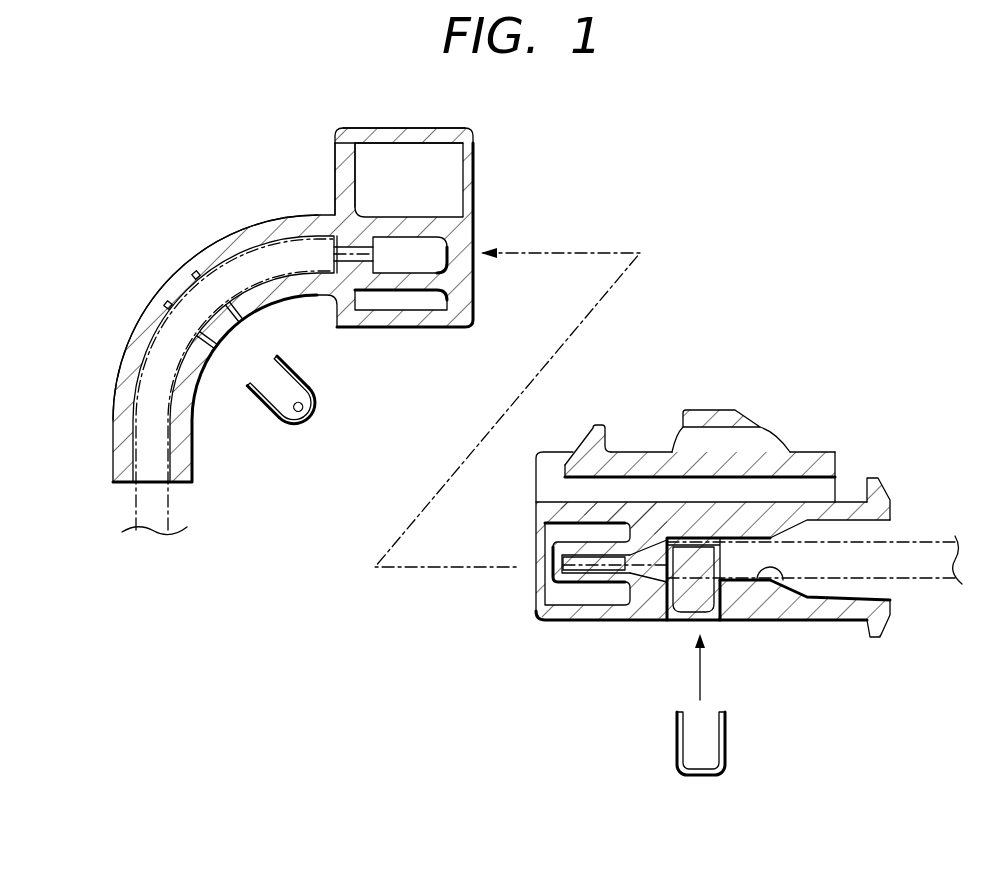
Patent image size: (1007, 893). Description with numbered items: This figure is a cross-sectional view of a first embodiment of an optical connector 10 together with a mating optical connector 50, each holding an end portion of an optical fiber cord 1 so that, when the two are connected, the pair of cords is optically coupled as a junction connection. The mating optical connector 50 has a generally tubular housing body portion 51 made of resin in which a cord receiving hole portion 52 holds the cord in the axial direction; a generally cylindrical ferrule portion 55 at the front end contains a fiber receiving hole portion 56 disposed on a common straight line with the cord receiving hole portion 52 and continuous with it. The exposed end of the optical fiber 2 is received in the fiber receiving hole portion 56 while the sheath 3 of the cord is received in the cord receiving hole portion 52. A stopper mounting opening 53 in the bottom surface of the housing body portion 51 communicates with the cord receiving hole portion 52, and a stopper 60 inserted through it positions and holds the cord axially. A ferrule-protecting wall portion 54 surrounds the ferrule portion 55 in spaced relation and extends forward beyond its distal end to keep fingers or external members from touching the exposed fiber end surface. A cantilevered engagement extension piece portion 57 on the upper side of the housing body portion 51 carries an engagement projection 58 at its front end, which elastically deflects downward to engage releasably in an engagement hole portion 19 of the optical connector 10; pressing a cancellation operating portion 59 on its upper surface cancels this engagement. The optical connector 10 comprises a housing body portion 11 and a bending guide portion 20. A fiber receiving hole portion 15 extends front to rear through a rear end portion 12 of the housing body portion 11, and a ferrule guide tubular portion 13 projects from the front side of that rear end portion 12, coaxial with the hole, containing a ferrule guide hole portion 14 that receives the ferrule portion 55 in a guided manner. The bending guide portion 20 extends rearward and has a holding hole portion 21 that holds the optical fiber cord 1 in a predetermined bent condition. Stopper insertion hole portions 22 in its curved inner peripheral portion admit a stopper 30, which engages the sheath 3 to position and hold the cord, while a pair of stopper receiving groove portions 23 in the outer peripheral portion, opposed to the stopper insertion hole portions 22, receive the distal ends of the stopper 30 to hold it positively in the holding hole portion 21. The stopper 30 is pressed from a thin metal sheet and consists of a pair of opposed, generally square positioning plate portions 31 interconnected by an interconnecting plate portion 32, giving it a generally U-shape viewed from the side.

The optical fiber cord 1 is at (122, 491).
The optical fiber 2 is at (372, 262).
The sheath 3 is at (137, 355).
The optical connector 10 is at (284, 154).
The housing body portion 11 is at (457, 330).
The rear end portion 12 is at (334, 166).
The ferrule guide tubular portion 13 is at (399, 216).
The ferrule guide hole portion 14 is at (441, 242).
The fiber receiving hole portion 15 is at (358, 256).
The engagement hole portion 19 is at (422, 138).
The bending guide portion 20 is at (201, 250).
The holding hole portion 21 is at (238, 262).
The stopper insertion hole portions 22 is at (220, 345).
The stopper receiving groove portions 23 is at (163, 301).
The stopper 30 is at (292, 428).
The positioning plate portions 31 is at (306, 372).
The interconnecting plate portion 32 is at (308, 413).
The mating optical connector 50 is at (691, 468).
The housing body portion 51 is at (630, 622).
The cord receiving hole portion 52 is at (783, 582).
The stopper mounting opening 53 is at (718, 622).
The ferrule-protecting wall portion 54 is at (538, 612).
The ferrule portion 55 is at (571, 578).
The fiber receiving hole portion 56 is at (640, 585).
The engagement extension piece portion 57 is at (652, 452).
The engagement projection 58 is at (598, 428).
The cancellation operating portion 59 is at (717, 410).
The stopper 60 is at (702, 778).